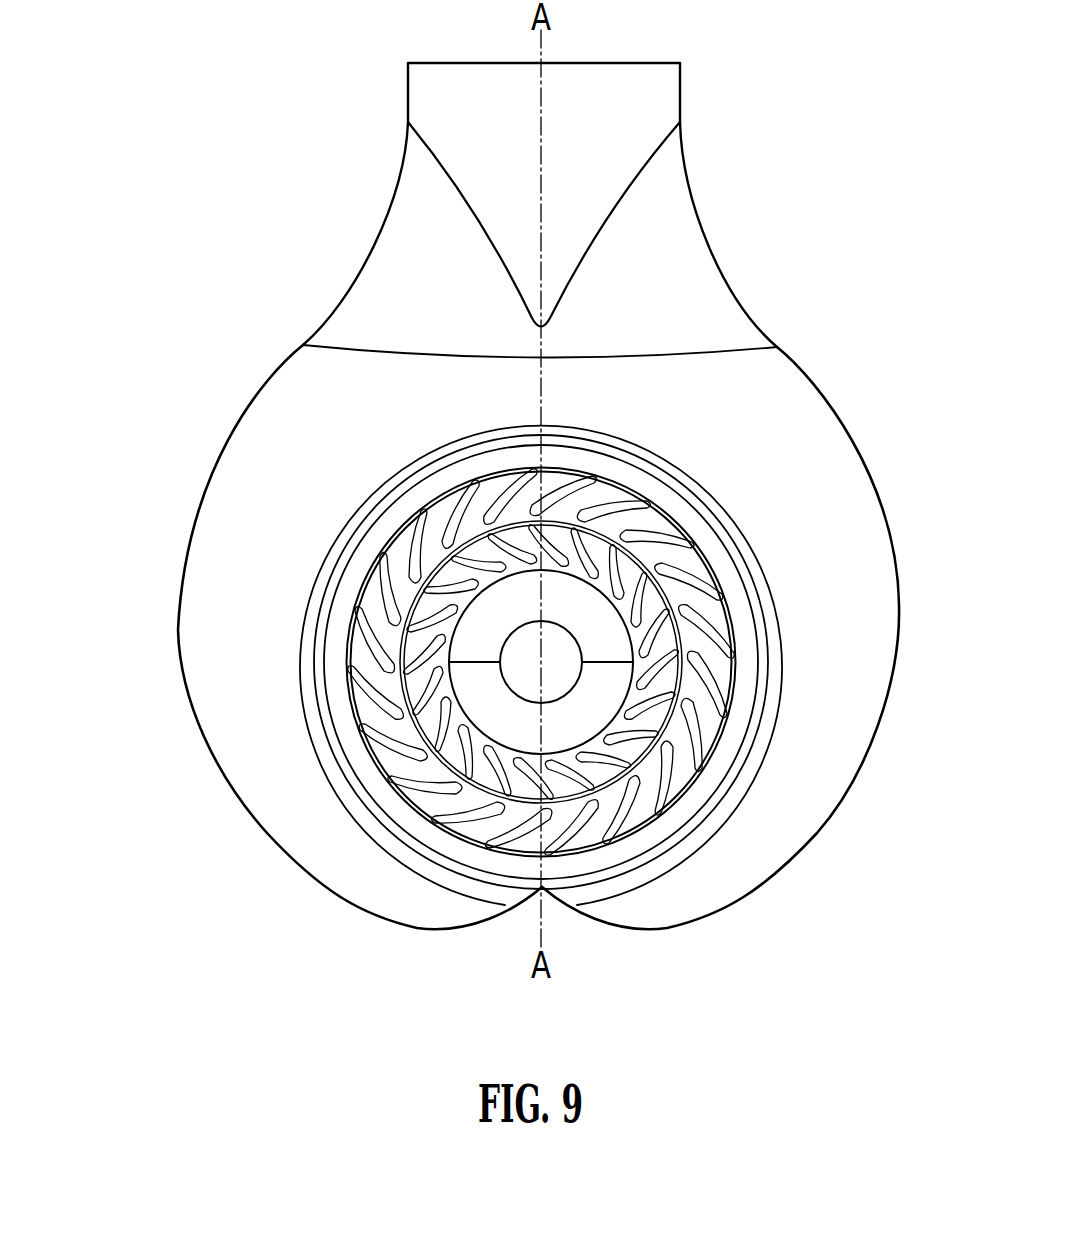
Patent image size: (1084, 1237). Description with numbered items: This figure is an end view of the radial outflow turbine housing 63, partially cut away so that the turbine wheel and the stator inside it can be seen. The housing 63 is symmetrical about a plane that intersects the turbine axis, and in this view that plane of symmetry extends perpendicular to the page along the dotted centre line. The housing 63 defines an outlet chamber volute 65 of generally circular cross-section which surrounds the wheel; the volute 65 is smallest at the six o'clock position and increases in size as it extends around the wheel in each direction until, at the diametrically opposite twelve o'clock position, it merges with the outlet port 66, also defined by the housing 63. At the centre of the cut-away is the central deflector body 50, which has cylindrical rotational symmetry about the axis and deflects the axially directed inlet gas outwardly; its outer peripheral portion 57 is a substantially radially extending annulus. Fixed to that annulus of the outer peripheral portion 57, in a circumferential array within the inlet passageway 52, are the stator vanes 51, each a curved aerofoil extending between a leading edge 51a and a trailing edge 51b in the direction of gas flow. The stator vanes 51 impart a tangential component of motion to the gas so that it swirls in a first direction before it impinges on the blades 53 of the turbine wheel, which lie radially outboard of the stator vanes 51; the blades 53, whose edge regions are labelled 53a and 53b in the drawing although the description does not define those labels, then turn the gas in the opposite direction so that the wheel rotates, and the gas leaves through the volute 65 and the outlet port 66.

The central deflector body 50 is at (612, 638).
The stator vanes 51 is at (410, 683).
The leading edge 51a is at (585, 775).
The trailing edge 51b is at (615, 766).
The inlet passageway 52 is at (660, 718).
The blades 53 is at (715, 565).
The nozzle vane 53a is at (620, 530).
The nozzle ring wall 53b is at (700, 521).
The outer peripheral portion 57 is at (457, 573).
The housing 63 is at (291, 401).
The outlet chamber volute 65 is at (509, 637).
The outlet port 66 is at (440, 113).